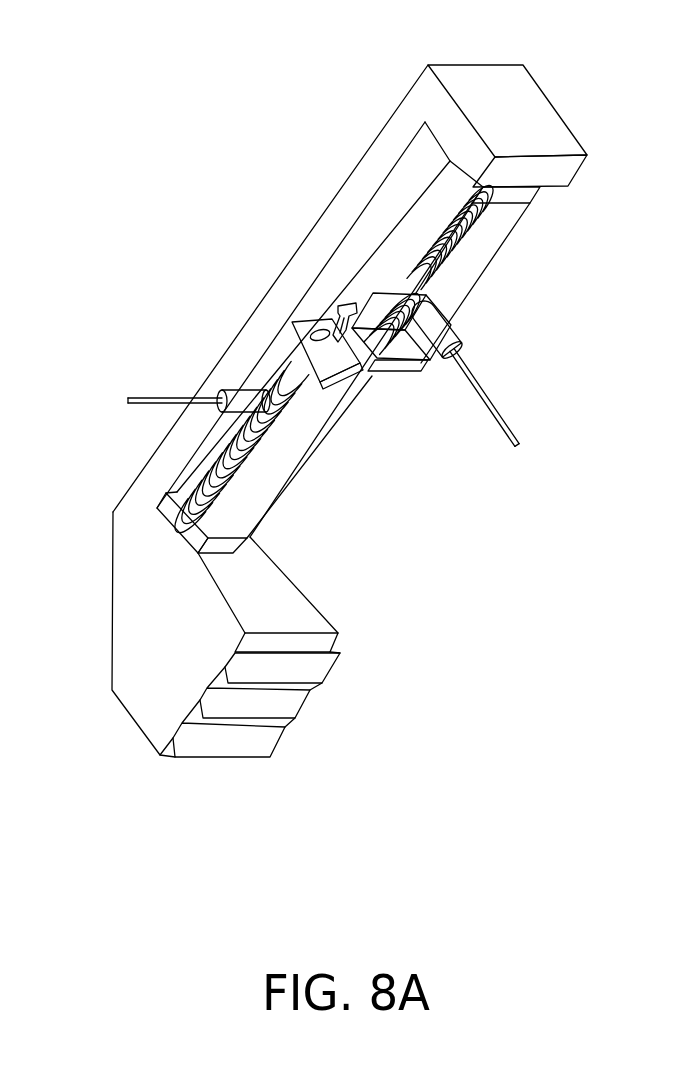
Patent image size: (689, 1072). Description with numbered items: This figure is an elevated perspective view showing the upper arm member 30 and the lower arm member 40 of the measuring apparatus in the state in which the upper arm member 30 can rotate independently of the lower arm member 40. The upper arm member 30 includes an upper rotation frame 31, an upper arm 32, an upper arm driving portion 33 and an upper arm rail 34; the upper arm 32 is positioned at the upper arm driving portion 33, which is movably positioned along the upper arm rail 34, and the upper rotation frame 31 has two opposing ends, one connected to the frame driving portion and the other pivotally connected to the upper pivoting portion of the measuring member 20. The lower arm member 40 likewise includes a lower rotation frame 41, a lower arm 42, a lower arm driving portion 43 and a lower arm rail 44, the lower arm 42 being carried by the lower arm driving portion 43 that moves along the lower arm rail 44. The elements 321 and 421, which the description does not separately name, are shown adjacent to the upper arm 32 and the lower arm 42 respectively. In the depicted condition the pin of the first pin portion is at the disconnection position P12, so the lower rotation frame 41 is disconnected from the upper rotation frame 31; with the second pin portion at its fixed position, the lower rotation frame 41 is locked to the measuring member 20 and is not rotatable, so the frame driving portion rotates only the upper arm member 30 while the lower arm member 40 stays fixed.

The measuring member 20 is at (508, 90).
The upper arm member 30 is at (545, 262).
The upper rotation frame 31 is at (458, 283).
The upper arm 32 is at (445, 343).
The rod 321 is at (521, 437).
The upper arm driving portion 33 is at (387, 270).
The upper arm rail 34 is at (433, 243).
The lower arm member 40 is at (298, 510).
The lower rotation frame 41 is at (312, 414).
The lower arm 42 is at (240, 405).
The rod 421 is at (128, 402).
The lower arm driving portion 43 is at (270, 380).
The lower arm rail 44 is at (217, 480).
The disconnection position P12 is at (332, 301).